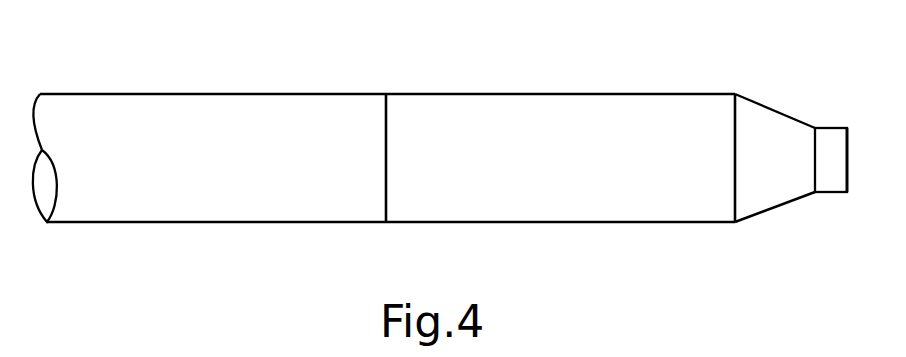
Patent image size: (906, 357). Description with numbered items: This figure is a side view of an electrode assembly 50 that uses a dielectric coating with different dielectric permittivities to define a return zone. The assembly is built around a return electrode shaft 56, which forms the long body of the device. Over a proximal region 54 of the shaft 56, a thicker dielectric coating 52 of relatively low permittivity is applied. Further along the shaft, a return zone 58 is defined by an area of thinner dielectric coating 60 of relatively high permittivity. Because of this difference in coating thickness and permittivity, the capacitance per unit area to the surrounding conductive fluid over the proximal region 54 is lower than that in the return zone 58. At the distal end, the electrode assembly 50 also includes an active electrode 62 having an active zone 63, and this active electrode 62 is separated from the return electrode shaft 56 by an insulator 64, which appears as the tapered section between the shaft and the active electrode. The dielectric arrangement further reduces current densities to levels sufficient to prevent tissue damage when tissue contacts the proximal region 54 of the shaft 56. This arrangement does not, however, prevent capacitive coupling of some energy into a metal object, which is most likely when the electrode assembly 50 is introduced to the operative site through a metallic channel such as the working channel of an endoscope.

The electrode assembly 50 is at (464, 237).
The thicker dielectric coating 52 is at (235, 92).
The region 54 is at (182, 200).
The return electrode shaft 56 is at (357, 108).
The return zone 58 is at (526, 108).
The thinner dielectric coating 60 is at (638, 92).
The active electrode 62 is at (827, 112).
The active zone 63 is at (835, 170).
The insulator 64 is at (780, 188).